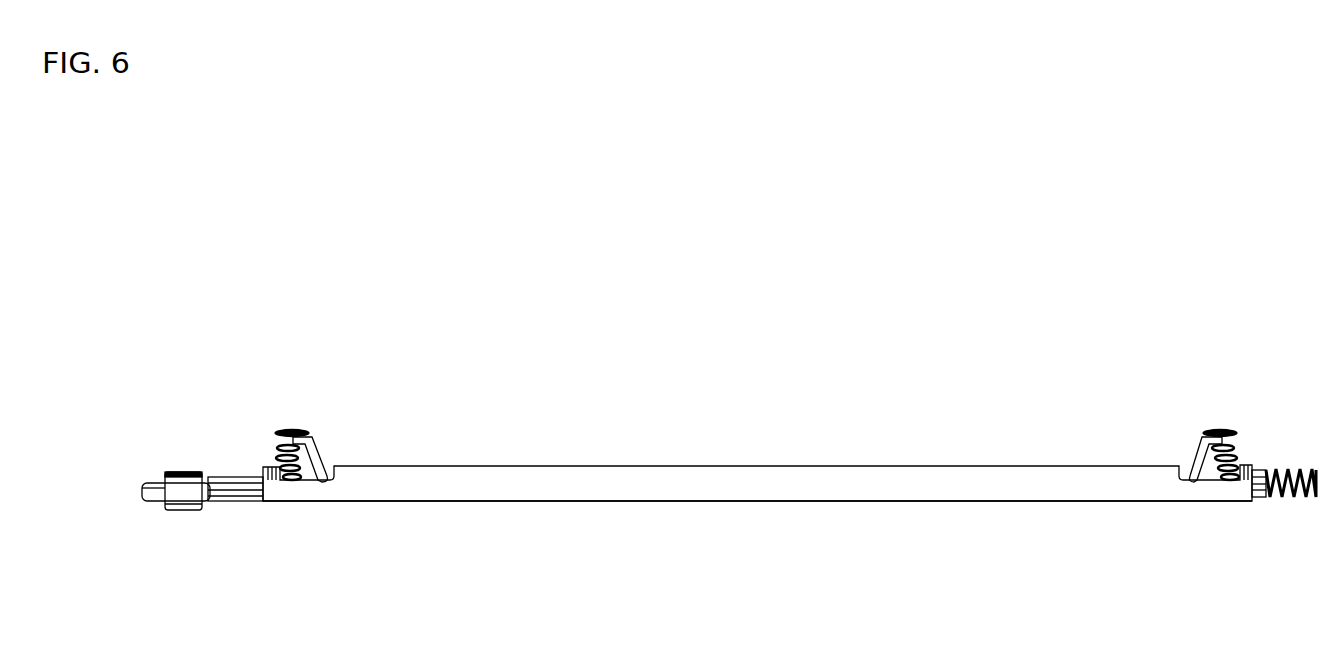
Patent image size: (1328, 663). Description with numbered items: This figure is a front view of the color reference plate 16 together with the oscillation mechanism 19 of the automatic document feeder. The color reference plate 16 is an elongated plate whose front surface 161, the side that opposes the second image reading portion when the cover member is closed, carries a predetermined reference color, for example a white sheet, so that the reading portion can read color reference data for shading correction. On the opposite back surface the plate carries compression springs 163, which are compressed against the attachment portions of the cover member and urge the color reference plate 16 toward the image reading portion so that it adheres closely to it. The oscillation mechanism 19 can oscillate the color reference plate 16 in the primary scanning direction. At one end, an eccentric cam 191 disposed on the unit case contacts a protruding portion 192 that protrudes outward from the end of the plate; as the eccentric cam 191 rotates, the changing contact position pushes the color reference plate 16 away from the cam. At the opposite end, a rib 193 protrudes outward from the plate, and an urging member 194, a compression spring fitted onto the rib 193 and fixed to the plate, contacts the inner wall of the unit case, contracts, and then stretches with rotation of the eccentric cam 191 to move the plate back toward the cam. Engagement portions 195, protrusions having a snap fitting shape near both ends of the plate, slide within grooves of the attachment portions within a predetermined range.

The color reference plate 16 is at (565, 487).
The front surface 161 is at (380, 501).
The compression springs 163 is at (278, 432).
The oscillation mechanism 19 is at (226, 385).
The eccentric cam 191 is at (150, 502).
The protruding portion 192 is at (225, 502).
The rib 193 is at (1260, 497).
The urging member 194 is at (1300, 497).
The engagement portions 195 is at (318, 440).